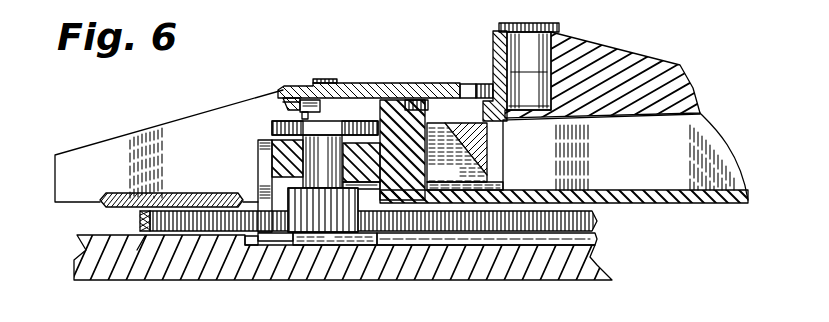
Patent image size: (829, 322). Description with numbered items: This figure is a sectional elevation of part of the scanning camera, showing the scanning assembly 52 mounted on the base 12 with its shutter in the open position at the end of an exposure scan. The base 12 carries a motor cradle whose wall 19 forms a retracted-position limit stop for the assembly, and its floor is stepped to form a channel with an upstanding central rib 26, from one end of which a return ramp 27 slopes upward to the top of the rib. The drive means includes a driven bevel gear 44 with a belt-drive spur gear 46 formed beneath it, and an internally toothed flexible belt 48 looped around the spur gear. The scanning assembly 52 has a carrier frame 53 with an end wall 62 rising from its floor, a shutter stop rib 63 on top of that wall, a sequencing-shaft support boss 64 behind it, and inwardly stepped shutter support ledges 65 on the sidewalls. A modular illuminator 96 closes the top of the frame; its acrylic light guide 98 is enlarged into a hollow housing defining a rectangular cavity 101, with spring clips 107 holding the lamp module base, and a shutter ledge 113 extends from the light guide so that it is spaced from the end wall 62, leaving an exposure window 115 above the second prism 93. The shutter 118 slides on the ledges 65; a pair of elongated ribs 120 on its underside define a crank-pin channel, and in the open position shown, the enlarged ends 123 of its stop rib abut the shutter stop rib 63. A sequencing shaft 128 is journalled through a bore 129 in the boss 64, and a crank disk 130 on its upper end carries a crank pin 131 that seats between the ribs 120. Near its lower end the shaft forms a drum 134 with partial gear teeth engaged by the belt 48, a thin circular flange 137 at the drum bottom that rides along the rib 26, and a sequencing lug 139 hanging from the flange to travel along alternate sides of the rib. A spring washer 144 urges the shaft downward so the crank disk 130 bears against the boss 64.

The base 12 is at (170, 272).
The wall 19 is at (258, 172).
The rib 26 is at (457, 240).
The return ramp 27 is at (350, 250).
The driven bevel gear 44 is at (106, 193).
The belt-drive spur gear 46 is at (150, 240).
The flexible belt 48 is at (140, 221).
The scanning assembly 52 is at (698, 82).
The carrier frame 53 is at (733, 162).
The end wall 62 is at (465, 159).
The shutter stop rib 63 is at (378, 100).
The sequencing-shaft support boss 64 is at (262, 156).
The shutter support ledges 65 is at (283, 100).
The second prism 93 is at (488, 158).
The modular illuminator 96 is at (490, 30).
The light guide 98 is at (600, 50).
The rectangular cavity 101 is at (529, 71).
The spring clips 107 is at (545, 23).
The shutter ledge 113 is at (478, 84).
The exposure window 115 is at (462, 84).
The shutter 118 is at (338, 82).
The elongated ribs 120 is at (283, 102).
The enlarged ends 123 is at (428, 108).
The sequencing shaft 128 is at (322, 161).
The bore 129 is at (348, 157).
The crank disk 130 is at (272, 128).
The crank pin 131 is at (320, 112).
The drum 134 is at (334, 220).
The circular flange 137 is at (376, 238).
The sequencing lug 139 is at (265, 247).
The spring washer 144 is at (357, 181).